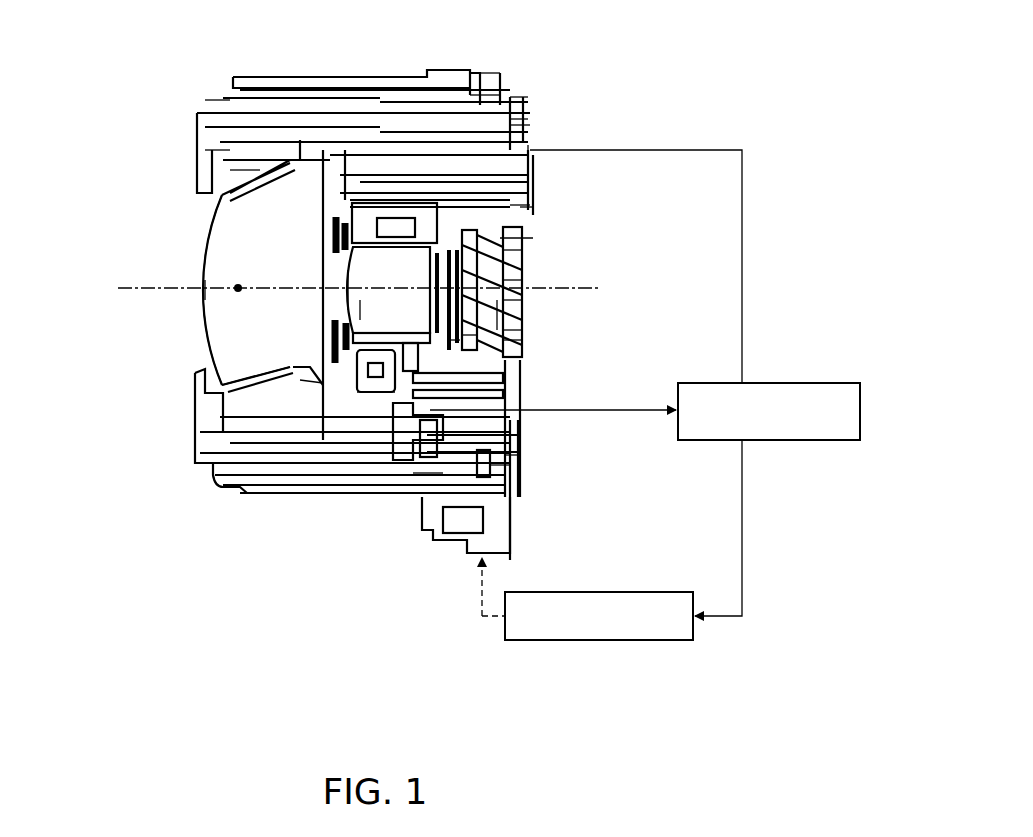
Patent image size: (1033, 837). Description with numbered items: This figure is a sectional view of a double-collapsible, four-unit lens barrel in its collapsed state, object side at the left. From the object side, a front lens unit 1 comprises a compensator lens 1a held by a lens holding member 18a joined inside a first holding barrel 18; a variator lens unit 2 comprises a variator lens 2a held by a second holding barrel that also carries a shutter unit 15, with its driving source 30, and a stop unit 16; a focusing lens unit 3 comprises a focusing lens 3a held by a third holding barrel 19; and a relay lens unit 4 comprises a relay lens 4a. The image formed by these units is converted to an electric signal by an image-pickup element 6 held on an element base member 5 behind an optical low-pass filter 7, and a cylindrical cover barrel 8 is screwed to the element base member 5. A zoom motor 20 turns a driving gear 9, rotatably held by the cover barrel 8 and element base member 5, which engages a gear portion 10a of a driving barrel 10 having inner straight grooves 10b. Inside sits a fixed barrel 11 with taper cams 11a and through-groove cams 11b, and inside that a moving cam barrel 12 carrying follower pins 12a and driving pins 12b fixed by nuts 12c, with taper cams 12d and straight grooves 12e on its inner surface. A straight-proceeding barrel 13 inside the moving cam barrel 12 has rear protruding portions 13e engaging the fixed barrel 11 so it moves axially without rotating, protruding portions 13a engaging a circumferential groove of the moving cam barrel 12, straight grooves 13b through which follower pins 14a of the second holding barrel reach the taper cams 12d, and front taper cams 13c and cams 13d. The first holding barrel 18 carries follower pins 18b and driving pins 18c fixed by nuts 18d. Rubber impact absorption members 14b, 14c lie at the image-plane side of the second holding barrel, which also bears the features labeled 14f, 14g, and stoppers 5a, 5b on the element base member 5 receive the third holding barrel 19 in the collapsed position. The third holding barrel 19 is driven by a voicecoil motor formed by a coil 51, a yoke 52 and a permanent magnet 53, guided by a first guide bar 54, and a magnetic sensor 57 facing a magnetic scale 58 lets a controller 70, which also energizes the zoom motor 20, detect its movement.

The front lens unit 1 is at (207, 232).
The compensator lens 1a is at (213, 268).
The variator lens unit 2 is at (343, 300).
The variator lens 2a is at (362, 308).
The focusing lens unit 3 is at (497, 310).
The focusing lens 3a is at (512, 340).
The relay lens unit 4 is at (565, 300).
The relay lens 4a is at (528, 335).
The element base member 5 is at (523, 128).
The stopper 5a is at (533, 238).
The stopper 5b is at (500, 377).
The image-pickup element 6 is at (525, 340).
The optical low-pass filter 7 is at (515, 343).
The cover barrel 8 is at (352, 83).
The driving gear 9 is at (507, 553).
The driving barrel 10 is at (353, 420).
The gear portion 10a is at (495, 525).
The straight groove 10b is at (373, 83).
The fixed barrel 11 is at (413, 77).
The taper cam 11a is at (500, 75).
The cam 11b is at (485, 98).
The moving cam barrel 12 is at (210, 113).
The follower pin 12a is at (522, 98).
The driving pin 12b is at (522, 119).
The nut 12c is at (537, 150).
The taper cam 12d is at (423, 473).
The straight groove 12e is at (210, 103).
The straight-proceeding barrel 13 is at (210, 150).
The protruding portion 13a is at (497, 470).
The straight groove 13b is at (437, 437).
The taper cam 13c is at (235, 95).
The cam 13d is at (285, 86).
The protruding portion 13e is at (523, 125).
The follower pin 14a is at (377, 392).
The impact absorption member 14b is at (522, 257).
The impact absorption member 14c is at (395, 378).
The cam groove 14f is at (522, 281).
The cam groove 14g is at (520, 455).
The shutter unit 15 is at (297, 423).
The stop unit 16 is at (323, 385).
The first holding barrel 18 is at (233, 485).
The lens holding member 18a is at (262, 402).
The follower pin 18b is at (265, 162).
The driving pin 18c is at (310, 83).
The nut 18d is at (343, 87).
The third holding barrel 19 is at (503, 393).
The zoom motor 20 is at (632, 592).
The driving source 30 is at (408, 450).
The coil 51 is at (537, 188).
The yoke 52 is at (525, 212).
The permanent magnet 53 is at (530, 168).
The first guide bar 54 is at (517, 207).
The magnetic sensor 57 is at (510, 430).
The magnetic scale 58 is at (545, 430).
The controller 70 is at (712, 382).